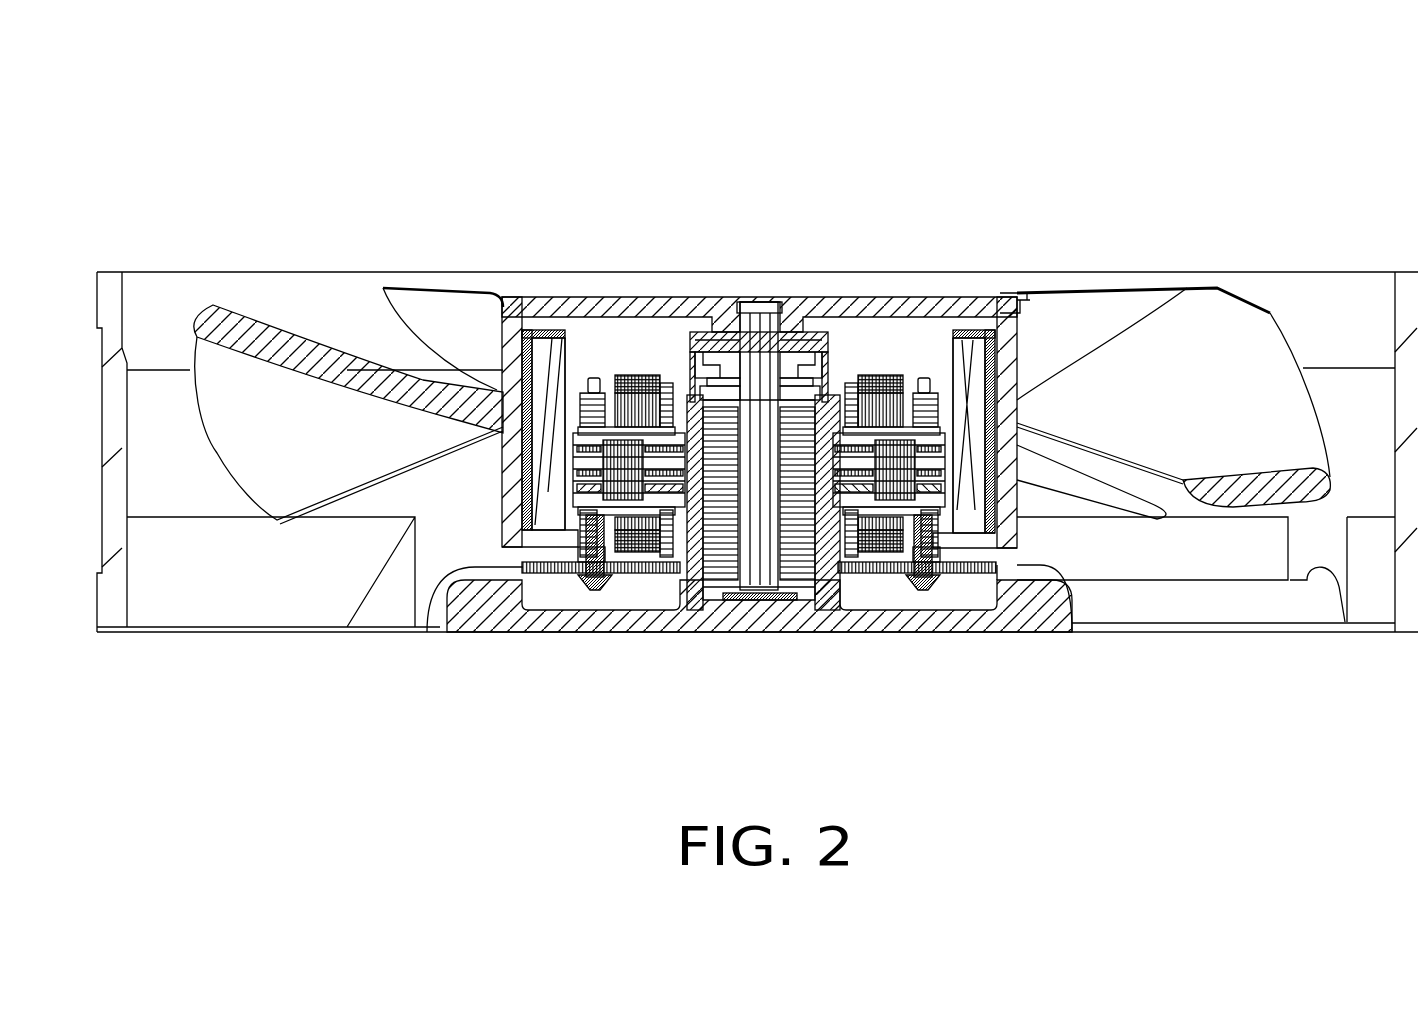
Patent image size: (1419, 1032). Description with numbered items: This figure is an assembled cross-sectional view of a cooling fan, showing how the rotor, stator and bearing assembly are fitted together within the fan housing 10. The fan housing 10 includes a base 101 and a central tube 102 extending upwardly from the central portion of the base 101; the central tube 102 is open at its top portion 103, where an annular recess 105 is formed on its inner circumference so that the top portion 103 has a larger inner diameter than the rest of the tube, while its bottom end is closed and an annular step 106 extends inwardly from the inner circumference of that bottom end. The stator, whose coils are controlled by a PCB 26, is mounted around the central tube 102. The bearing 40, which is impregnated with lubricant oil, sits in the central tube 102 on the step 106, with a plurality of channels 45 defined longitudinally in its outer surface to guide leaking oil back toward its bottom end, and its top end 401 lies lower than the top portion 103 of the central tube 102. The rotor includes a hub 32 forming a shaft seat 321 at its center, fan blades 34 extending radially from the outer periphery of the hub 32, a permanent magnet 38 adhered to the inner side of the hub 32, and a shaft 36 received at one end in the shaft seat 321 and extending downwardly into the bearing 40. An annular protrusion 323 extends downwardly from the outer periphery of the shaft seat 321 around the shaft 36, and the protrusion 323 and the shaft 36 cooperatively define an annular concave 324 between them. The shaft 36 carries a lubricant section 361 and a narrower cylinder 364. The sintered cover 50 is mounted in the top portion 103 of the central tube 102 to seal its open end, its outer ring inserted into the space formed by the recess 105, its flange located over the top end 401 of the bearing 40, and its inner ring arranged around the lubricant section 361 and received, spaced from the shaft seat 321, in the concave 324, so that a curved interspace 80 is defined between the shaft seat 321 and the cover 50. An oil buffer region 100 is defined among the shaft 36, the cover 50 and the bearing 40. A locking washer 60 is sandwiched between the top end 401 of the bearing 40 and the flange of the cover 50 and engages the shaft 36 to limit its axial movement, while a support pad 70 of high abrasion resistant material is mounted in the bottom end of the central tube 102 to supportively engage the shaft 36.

The fan housing 10 is at (110, 622).
The PCB 26 is at (980, 600).
The hub 32 is at (500, 296).
The fan blades 34 is at (1222, 385).
The shaft 36 is at (770, 590).
The permanent magnet 38 is at (1167, 287).
The bearing 40 is at (715, 575).
The channels 45 is at (843, 575).
The cover 50 is at (527, 333).
The locking washer 60 is at (977, 423).
The support pad 70 is at (745, 578).
The curved interspace 80 is at (793, 330).
The oil buffer region 100 is at (1045, 296).
The base 101 is at (458, 630).
The central tube 102 is at (700, 592).
The top portion 103 is at (640, 345).
The annular recess 105 is at (668, 360).
The annular step 106 is at (812, 588).
The shaft seat 321 is at (700, 345).
The annular protrusion 323 is at (808, 352).
The annular concave 324 is at (716, 330).
The lubricant section 361 is at (782, 345).
The cylinder 364 is at (865, 560).
The top end 401 is at (473, 293).